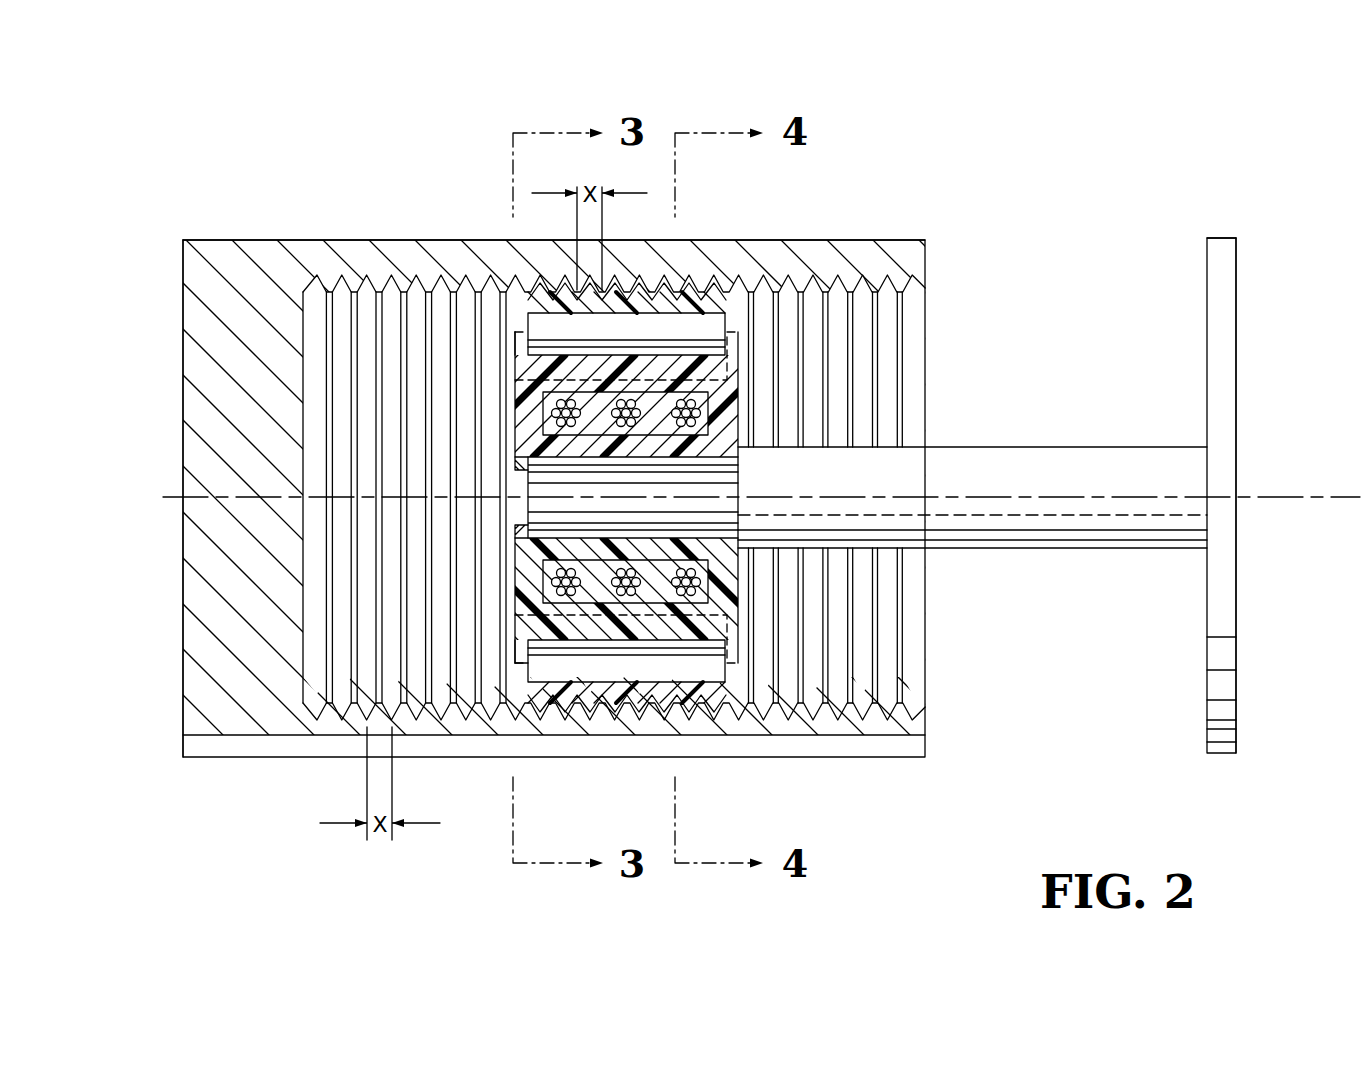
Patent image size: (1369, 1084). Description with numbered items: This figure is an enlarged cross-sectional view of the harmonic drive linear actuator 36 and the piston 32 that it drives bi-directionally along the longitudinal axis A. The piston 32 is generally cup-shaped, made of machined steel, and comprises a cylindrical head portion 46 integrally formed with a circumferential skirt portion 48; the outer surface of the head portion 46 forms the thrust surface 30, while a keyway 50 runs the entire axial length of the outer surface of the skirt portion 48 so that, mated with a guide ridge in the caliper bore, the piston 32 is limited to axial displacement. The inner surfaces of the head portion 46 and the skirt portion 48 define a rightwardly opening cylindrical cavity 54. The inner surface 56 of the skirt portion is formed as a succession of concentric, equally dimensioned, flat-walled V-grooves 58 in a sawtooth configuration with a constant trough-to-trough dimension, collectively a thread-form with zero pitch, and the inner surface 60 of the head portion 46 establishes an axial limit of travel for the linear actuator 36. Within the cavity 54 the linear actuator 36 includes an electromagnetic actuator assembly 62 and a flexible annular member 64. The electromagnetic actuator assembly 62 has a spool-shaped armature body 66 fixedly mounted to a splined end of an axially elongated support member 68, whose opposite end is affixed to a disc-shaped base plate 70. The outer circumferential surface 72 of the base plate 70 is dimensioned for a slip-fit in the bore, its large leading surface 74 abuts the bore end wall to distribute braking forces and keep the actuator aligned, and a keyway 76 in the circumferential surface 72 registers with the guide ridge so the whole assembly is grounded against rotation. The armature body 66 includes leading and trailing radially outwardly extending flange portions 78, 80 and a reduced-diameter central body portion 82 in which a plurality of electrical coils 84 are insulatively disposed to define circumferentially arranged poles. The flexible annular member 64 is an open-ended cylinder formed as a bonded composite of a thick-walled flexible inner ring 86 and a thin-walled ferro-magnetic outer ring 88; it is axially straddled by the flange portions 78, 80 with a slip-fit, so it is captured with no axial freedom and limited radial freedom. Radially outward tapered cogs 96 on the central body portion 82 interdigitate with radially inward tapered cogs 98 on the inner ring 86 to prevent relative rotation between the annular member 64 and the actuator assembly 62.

The thrust surface 30 is at (183, 273).
The piston 32 is at (179, 675).
The harmonic drive linear actuator 36 is at (913, 202).
The head portion 46 is at (197, 362).
The skirt portion 48 is at (399, 248).
The keyway 50 is at (287, 745).
The cylindrical cavity 54 is at (890, 373).
The inner surface of skirt portion 56 is at (355, 285).
The V-grooves 58 is at (880, 710).
The inner surface of head portion 60 is at (315, 580).
The electromagnetic actuator assembly 62 is at (745, 578).
The flexible annular member 64 is at (520, 690).
The armature body 66 is at (737, 390).
The support member 68 is at (1047, 447).
The base plate 70 is at (1228, 296).
The outer circumferential surface 72 is at (1221, 238).
The leading surface 74 is at (1236, 422).
The keyway 76 is at (1236, 752).
The leading flange portion 78 is at (520, 347).
The trailing flange portion 80 is at (740, 652).
The central body portion 82 is at (653, 368).
The electrical coils 84 is at (647, 600).
The inner ring 86 is at (710, 703).
The outer ring 88 is at (574, 700).
The tapered cogs 96 is at (648, 630).
The tapered cogs 98 is at (695, 322).
The longitudinal axis A is at (164, 497).